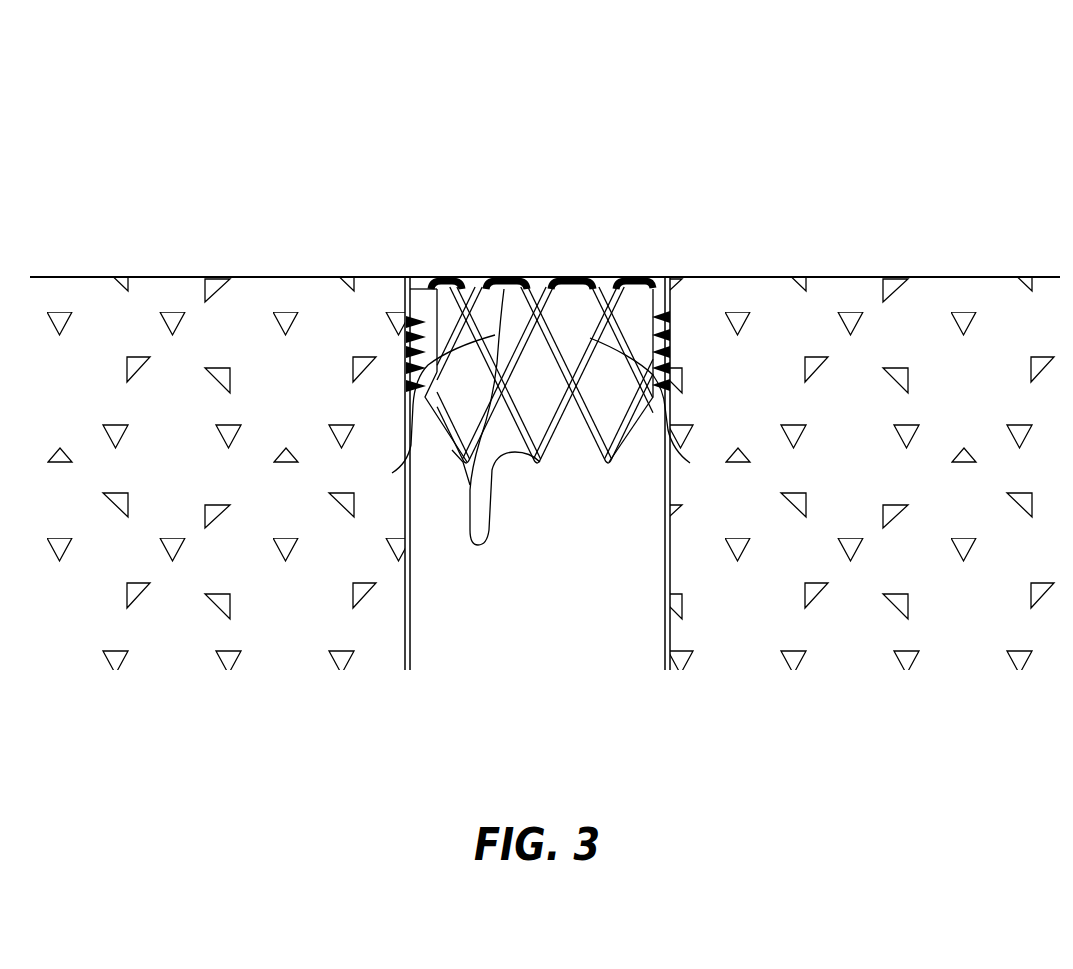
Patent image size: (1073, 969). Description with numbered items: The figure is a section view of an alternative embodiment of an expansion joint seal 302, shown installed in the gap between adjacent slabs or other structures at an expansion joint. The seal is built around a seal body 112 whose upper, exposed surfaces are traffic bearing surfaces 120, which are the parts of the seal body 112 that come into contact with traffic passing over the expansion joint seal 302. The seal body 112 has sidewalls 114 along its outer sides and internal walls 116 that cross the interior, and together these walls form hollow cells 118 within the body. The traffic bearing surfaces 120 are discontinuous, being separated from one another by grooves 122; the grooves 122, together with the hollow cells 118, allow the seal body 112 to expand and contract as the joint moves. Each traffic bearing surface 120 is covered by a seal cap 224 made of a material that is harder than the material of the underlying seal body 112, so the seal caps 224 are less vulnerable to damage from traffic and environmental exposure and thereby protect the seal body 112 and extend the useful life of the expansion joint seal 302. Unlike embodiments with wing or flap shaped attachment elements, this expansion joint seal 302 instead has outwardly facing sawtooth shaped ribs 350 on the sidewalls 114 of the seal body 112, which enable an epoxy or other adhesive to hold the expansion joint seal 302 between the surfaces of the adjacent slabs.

The expansion joint seal 302 is at (397, 84).
The sawtooth shaped ribs 350 is at (384, 273).
The seal cap 224 is at (451, 274).
The grooves 122 is at (470, 297).
The hollow cells 118 is at (484, 338).
The traffic bearing surfaces 120 is at (505, 288).
The sidewalls 114 is at (540, 408).
The internal walls 116 is at (496, 430).
The seal body 112 is at (667, 583).